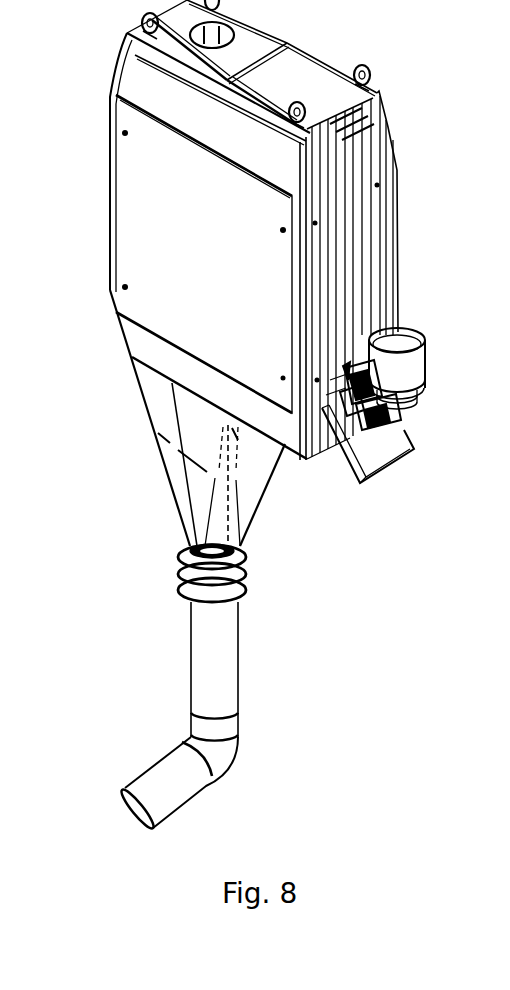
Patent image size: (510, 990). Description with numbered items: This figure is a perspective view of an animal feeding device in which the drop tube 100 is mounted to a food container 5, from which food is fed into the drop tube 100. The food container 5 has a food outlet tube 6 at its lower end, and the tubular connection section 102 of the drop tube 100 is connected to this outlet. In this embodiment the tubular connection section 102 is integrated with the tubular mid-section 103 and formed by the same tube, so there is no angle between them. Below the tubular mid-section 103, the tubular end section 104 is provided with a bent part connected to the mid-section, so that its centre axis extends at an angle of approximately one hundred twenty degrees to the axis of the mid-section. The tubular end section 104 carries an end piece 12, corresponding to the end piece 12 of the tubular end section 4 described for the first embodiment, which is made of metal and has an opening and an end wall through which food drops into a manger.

The tubular end section 4 is at (3, 704).
The food container 5 is at (145, 205).
The food outlet tube 6 is at (177, 463).
The drop tube 100 is at (214, 688).
The tubular connection section 102 is at (246, 572).
The tubular mid-section 103 is at (225, 647).
The tubular end section 104 is at (243, 742).
The end piece 12 is at (182, 787).